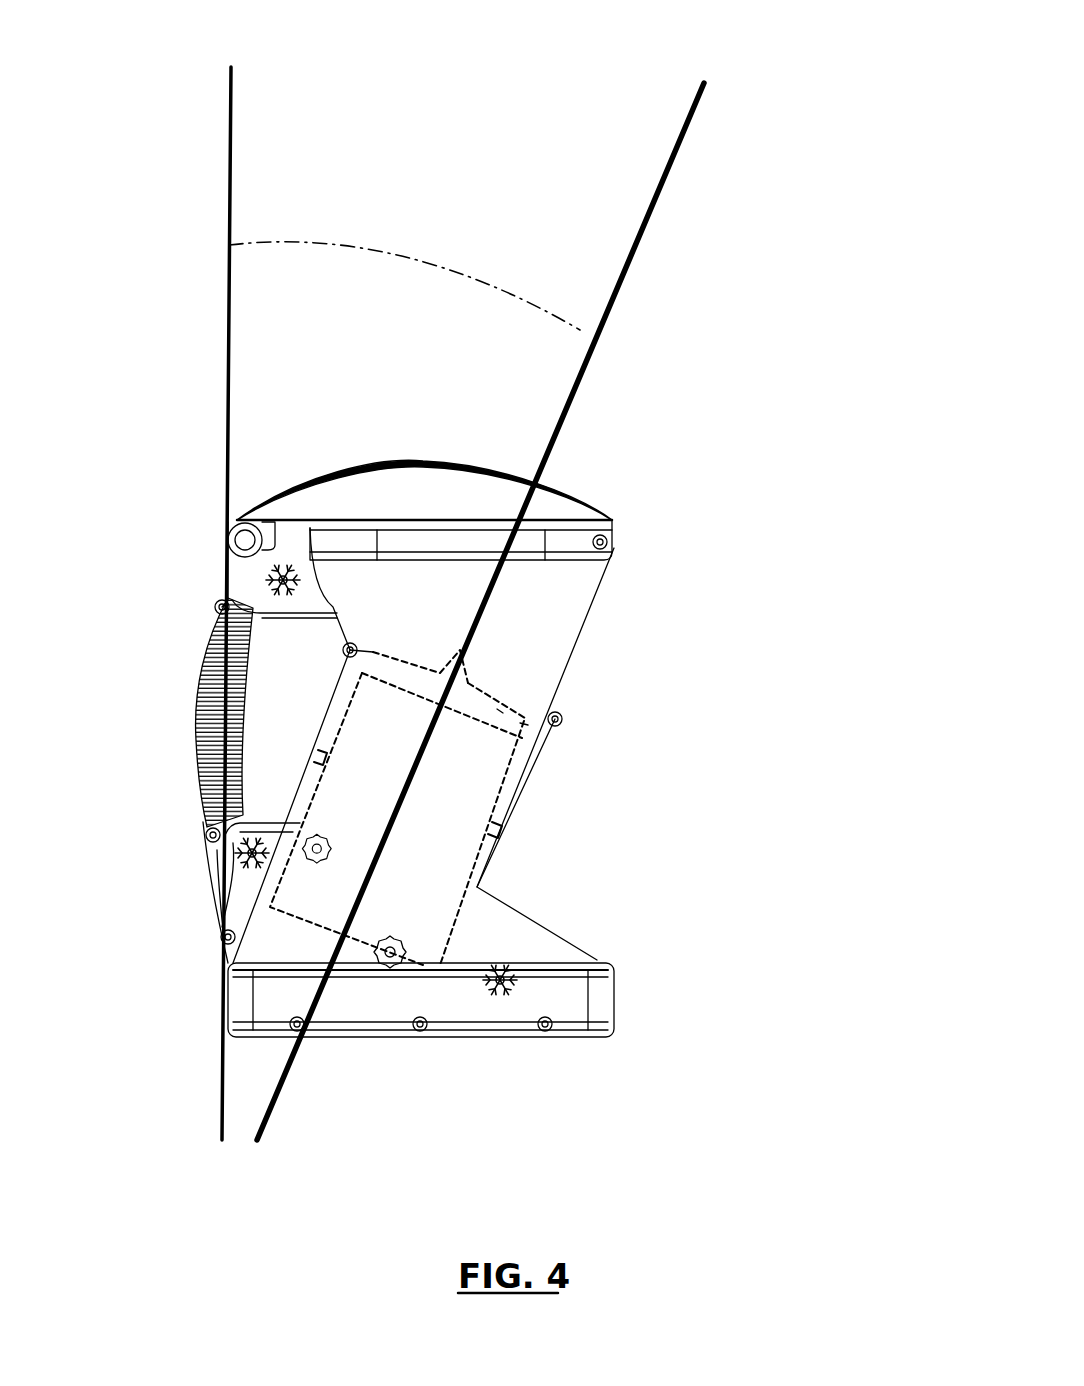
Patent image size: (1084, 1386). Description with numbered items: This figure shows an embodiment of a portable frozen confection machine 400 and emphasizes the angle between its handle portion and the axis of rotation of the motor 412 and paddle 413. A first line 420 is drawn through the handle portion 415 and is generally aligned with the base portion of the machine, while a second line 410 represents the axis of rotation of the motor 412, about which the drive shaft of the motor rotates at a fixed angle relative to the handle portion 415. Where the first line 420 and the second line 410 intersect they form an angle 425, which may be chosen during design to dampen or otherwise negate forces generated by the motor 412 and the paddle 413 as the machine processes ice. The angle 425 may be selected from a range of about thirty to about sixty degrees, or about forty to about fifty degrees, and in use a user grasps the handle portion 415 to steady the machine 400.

The frozen confection machine 400 is at (635, 490).
The second line 410 is at (647, 228).
The motor 412 is at (443, 863).
The paddle 413 is at (497, 709).
The handle portion 415 is at (205, 678).
The first line 420 is at (229, 123).
The angle 425 is at (372, 248).